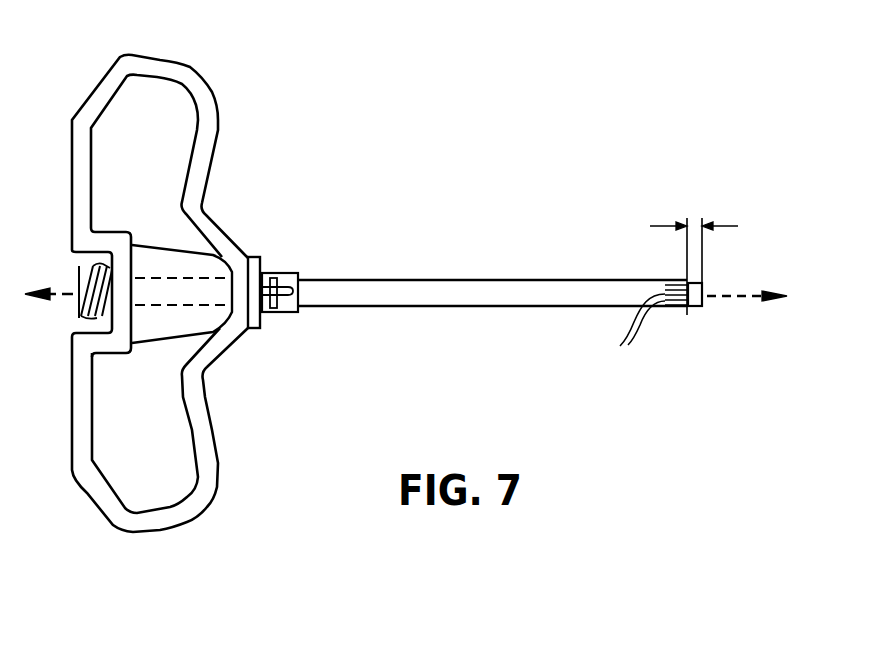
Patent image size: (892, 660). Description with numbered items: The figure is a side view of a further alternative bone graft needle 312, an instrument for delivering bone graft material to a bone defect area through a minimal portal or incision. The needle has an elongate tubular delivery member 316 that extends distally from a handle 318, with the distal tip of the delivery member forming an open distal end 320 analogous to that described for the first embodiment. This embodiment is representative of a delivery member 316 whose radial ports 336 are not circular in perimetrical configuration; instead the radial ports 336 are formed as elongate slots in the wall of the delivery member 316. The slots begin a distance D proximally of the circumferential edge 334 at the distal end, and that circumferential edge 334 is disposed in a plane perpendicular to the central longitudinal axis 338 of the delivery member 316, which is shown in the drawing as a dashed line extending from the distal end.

The bone graft needle 312 is at (458, 240).
The delivery member 316 is at (402, 270).
The handle 318 is at (72, 78).
The distal tip 320 is at (717, 284).
The circumferential edge 334 is at (703, 304).
The radial ports 336 is at (665, 287).
The central longitudinal axis 338 is at (747, 298).